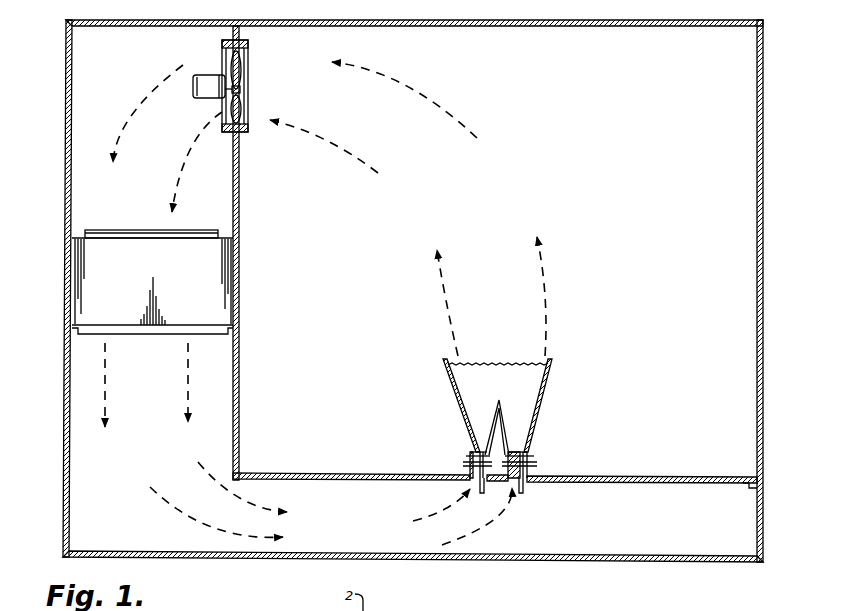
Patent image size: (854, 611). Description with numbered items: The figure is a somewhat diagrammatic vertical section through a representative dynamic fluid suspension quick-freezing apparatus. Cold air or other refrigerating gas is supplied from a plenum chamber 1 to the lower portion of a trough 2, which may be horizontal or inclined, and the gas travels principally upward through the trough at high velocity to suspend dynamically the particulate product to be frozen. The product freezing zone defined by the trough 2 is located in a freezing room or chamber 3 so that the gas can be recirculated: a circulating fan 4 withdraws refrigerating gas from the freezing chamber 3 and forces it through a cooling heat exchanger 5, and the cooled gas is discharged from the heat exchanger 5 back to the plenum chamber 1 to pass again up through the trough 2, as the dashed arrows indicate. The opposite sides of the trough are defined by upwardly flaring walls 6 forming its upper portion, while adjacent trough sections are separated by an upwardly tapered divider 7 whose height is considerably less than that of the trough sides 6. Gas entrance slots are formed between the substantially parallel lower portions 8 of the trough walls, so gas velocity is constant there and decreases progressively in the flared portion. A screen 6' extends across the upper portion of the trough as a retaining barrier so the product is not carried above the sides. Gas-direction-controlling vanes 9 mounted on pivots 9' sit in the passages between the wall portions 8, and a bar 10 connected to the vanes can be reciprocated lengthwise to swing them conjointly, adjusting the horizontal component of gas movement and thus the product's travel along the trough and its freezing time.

The plenum chamber 1 is at (382, 479).
The trough 2 is at (497, 356).
The freezing room or chamber 3 is at (665, 28).
The circulating fan 4 is at (249, 93).
The cooling heat exchanger 5 is at (190, 287).
The upwardly flaring walls 6 is at (495, 394).
The screen 6' is at (522, 344).
The upwardly tapered divider 7 is at (503, 407).
The lower portions of the trough walls 8 is at (468, 468).
The gas-direction-controlling vanes 9 is at (498, 439).
The pivots 9' is at (495, 457).
The bar 10 is at (484, 494).